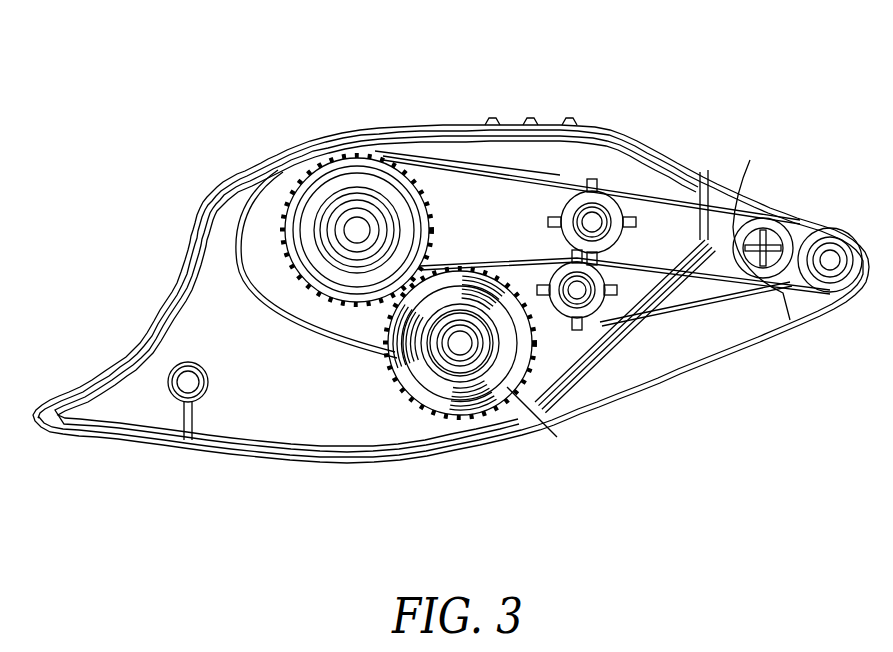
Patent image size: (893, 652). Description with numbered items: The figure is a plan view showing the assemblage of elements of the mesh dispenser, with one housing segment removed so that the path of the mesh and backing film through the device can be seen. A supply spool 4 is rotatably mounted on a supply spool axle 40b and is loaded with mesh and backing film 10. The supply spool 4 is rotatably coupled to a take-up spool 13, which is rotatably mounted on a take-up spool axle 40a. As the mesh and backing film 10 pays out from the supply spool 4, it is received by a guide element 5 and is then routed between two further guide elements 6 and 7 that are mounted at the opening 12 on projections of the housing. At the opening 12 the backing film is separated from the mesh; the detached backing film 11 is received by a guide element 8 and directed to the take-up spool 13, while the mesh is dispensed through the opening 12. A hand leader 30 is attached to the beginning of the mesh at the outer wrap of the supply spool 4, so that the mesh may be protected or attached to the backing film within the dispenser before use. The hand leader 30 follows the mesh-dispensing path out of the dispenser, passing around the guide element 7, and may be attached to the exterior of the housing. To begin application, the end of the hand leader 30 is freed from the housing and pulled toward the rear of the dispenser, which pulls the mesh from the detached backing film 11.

The hand leader 30 is at (452, 462).
The supply spool 4 is at (550, 432).
The take-up spool axle 40a is at (345, 163).
The take-up spool 13 is at (391, 177).
The supply spool axle 40b is at (452, 360).
The detached backing film 11 is at (527, 180).
The guide element 8 is at (608, 207).
The guide element 5 is at (597, 310).
The guide element 6 is at (783, 280).
The guide element 7 is at (838, 292).
The opening 12 is at (733, 222).
The mesh and backing film 10 is at (693, 272).